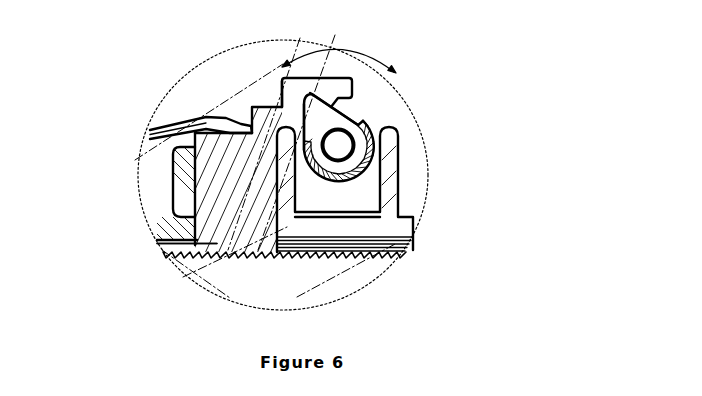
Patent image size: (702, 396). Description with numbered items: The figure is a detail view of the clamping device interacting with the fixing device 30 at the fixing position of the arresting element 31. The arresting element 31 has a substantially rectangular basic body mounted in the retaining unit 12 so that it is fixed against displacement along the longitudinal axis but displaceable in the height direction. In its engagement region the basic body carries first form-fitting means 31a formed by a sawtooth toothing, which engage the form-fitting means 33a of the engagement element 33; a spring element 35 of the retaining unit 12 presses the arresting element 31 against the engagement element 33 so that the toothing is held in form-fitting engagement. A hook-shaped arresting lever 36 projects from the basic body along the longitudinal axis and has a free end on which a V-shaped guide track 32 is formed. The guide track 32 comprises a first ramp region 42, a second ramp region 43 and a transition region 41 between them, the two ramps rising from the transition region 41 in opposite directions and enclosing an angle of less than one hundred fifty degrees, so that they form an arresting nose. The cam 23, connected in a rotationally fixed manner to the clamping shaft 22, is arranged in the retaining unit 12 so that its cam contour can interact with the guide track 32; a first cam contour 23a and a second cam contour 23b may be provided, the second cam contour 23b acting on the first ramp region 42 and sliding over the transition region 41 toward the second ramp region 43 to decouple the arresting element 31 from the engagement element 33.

The retaining unit 12 is at (180, 168).
The clamping shaft 22 is at (390, 155).
The cam 23 is at (322, 117).
The first cam contour 23a is at (297, 113).
The second cam contour 23b is at (303, 98).
The fixing device 30 is at (443, 138).
The arresting element 31 is at (210, 188).
The first form-fitting means 31a is at (157, 242).
The guide track 32 is at (341, 100).
The engagement element 33 is at (322, 287).
The form-fitting means 33a is at (388, 235).
The spring element 35 is at (173, 115).
The arresting lever 36 is at (281, 108).
The transition region 41 is at (340, 113).
The first ramp region 42 is at (267, 137).
The second ramp region 43 is at (345, 106).